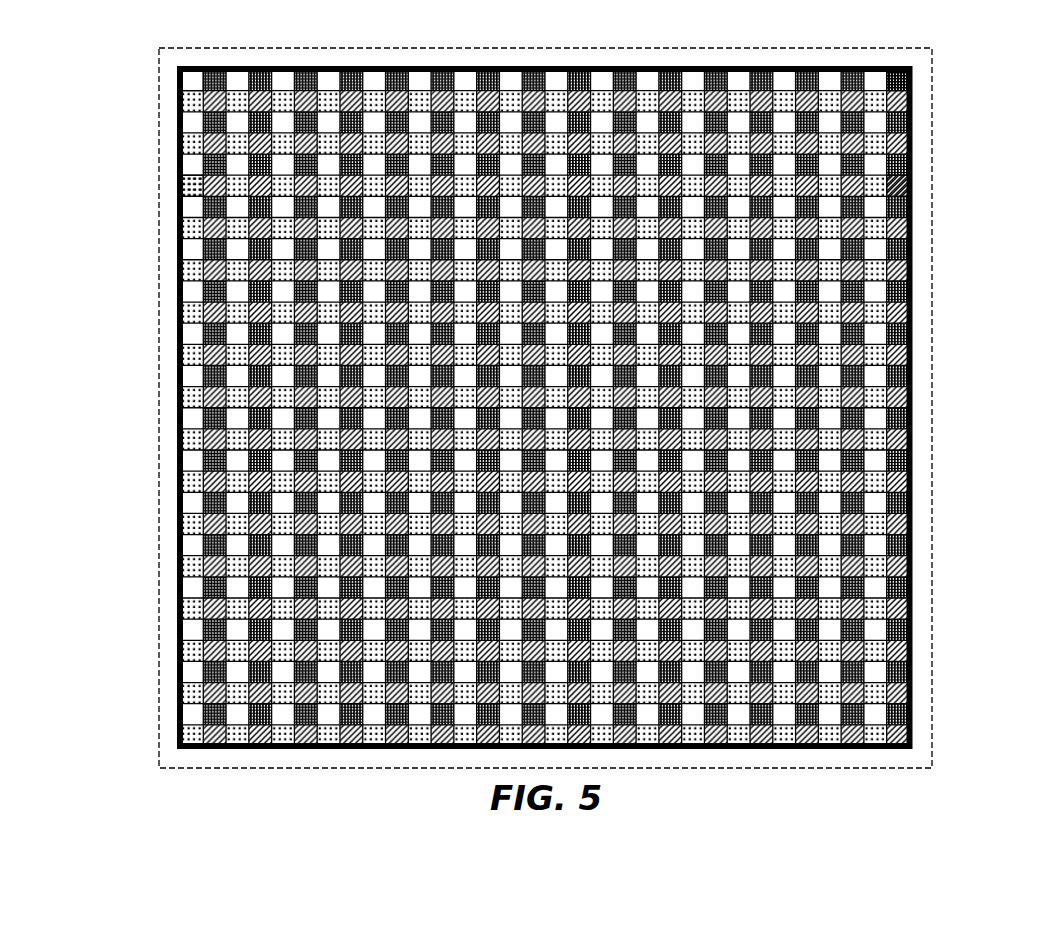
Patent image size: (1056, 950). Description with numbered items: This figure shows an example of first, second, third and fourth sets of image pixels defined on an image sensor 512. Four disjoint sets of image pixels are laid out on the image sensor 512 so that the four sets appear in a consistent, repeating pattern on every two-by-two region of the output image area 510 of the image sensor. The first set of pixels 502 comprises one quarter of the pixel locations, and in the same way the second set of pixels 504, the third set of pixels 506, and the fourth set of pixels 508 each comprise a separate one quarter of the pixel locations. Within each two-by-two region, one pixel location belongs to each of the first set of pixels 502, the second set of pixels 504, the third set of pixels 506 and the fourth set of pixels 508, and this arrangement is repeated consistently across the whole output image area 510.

The first set of pixels 502 is at (190, 82).
The second set of pixels 504 is at (188, 185).
The third set of pixels 506 is at (910, 82).
The fourth set of pixels 508 is at (910, 185).
The output image area of the image sensor 510 is at (180, 483).
The image sensor 512 is at (160, 583).